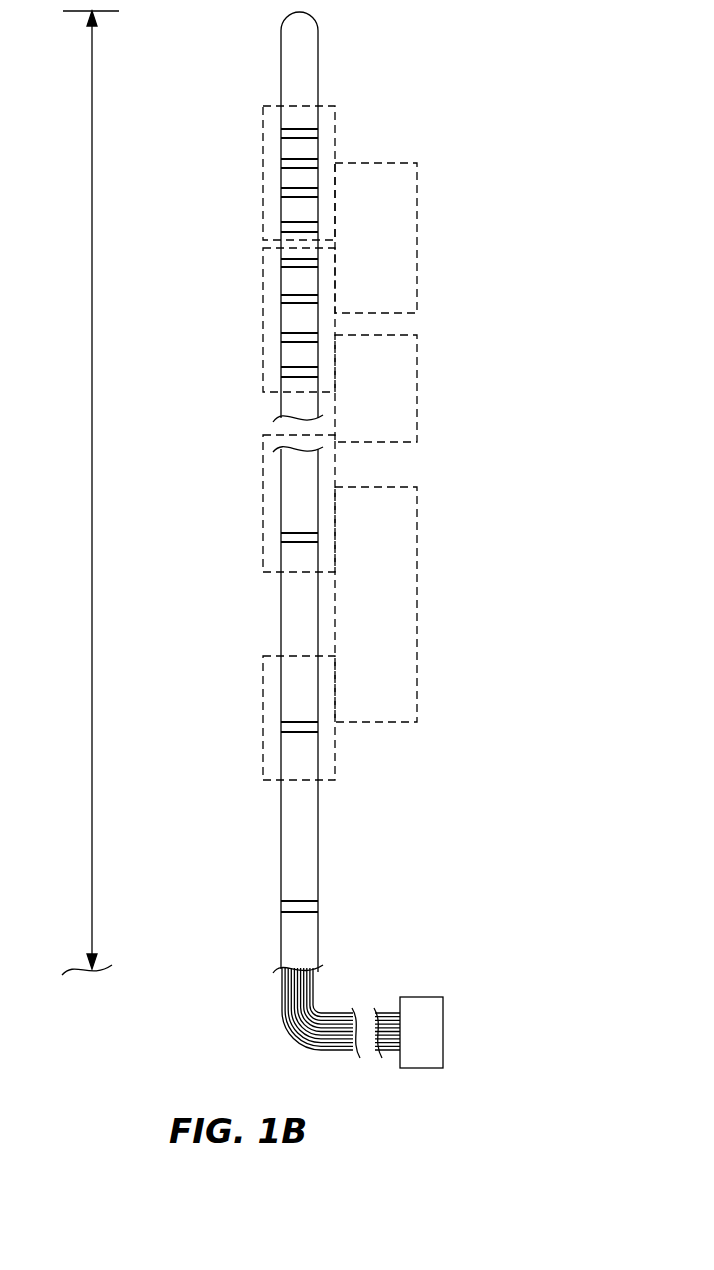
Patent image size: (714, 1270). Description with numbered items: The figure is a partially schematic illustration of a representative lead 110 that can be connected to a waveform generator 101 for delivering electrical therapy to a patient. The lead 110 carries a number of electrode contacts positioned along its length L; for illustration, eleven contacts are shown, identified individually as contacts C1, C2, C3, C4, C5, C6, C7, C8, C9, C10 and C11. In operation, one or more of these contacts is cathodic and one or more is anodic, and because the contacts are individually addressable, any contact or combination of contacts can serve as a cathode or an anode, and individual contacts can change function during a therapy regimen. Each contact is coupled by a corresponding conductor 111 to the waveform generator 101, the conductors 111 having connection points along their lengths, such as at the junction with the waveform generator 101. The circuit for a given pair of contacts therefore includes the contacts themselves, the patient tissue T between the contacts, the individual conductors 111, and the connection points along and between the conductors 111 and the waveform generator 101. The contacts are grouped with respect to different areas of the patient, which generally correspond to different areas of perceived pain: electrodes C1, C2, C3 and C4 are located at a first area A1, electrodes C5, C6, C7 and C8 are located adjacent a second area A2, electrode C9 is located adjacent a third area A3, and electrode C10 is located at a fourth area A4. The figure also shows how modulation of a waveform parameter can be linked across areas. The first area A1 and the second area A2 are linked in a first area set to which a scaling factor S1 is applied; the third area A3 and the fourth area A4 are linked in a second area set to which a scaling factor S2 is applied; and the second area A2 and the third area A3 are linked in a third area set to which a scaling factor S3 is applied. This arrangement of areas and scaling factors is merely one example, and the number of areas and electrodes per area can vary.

The lead 110 is at (380, 827).
The length L is at (90, 493).
The contact C1 is at (285, 133).
The contact C2 is at (285, 163).
The contact C3 is at (285, 192).
The contact C4 is at (285, 228).
The contact C5 is at (285, 262).
The contact C6 is at (285, 298).
The contact C7 is at (285, 336).
The contact C8 is at (285, 371).
The contact C9 is at (285, 538).
The contact C10 is at (285, 727).
The contact C11 is at (285, 906).
The first area A1 is at (335, 112).
The second area A2 is at (335, 273).
The third area A3 is at (335, 466).
The fourth area A4 is at (335, 683).
The scaling factor S1 is at (417, 242).
The scaling factor S2 is at (417, 612).
The scaling factor S3 is at (417, 392).
The patient tissue T is at (344, 194).
The conductor 111 is at (318, 973).
The waveform generator 101 is at (443, 1018).